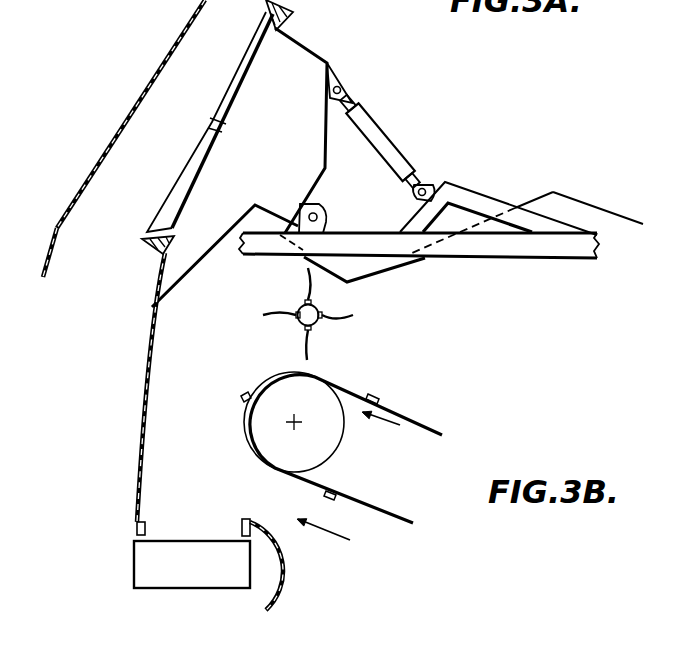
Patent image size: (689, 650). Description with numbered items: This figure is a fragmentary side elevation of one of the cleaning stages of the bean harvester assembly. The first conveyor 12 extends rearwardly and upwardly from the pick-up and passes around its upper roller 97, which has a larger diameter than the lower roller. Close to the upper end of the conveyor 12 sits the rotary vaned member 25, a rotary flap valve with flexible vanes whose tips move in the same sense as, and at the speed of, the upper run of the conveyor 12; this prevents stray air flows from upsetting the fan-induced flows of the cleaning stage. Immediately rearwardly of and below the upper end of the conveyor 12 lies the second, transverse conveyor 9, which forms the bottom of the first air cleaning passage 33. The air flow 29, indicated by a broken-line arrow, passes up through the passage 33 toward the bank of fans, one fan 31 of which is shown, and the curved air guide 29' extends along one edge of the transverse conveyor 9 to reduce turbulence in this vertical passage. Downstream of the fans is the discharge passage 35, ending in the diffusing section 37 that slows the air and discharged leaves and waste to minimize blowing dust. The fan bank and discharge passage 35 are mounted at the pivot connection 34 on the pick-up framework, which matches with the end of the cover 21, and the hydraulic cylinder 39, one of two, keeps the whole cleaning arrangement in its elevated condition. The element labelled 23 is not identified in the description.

The second transverse conveyor 9 is at (143, 560).
The first conveyor 12 is at (402, 410).
The cover 21 is at (600, 205).
The support frame 23 is at (557, 193).
The rotary vaned member 25 is at (282, 322).
The air flow 29 is at (351, 535).
The curved air guide 29' is at (296, 566).
The fan 31 is at (247, 63).
The first air cleaning passage 33 is at (288, 501).
The pivot connection 34 is at (303, 212).
The discharge passage 35 is at (88, 176).
The diffusing section 37 is at (55, 257).
The hydraulic cylinder 39 is at (392, 165).
The upper roller 97 is at (272, 438).